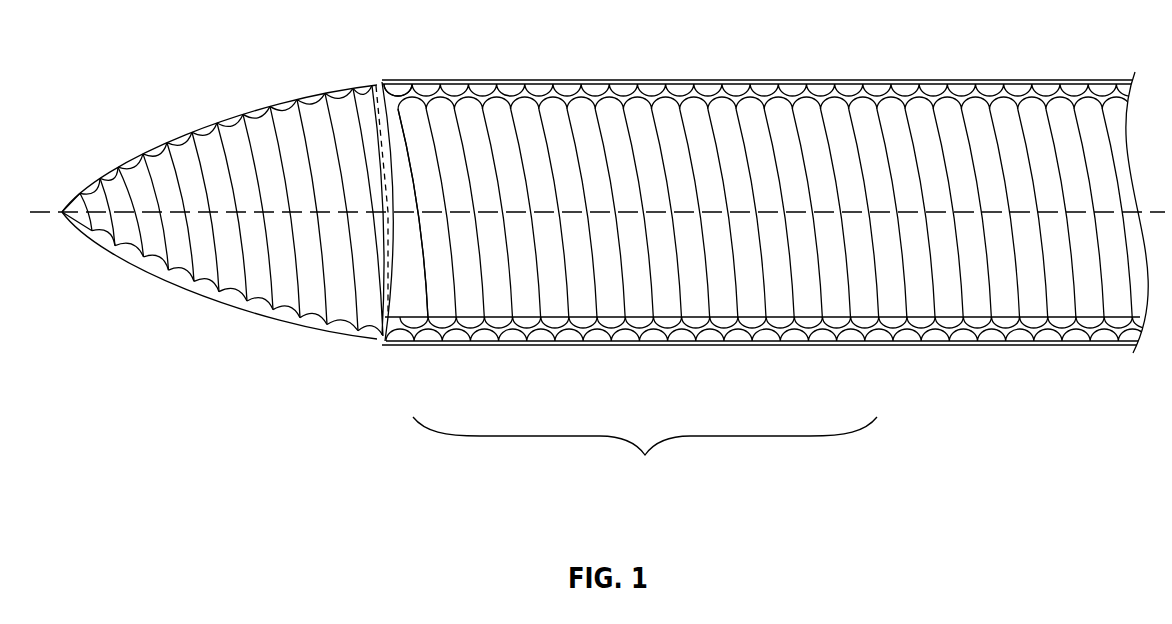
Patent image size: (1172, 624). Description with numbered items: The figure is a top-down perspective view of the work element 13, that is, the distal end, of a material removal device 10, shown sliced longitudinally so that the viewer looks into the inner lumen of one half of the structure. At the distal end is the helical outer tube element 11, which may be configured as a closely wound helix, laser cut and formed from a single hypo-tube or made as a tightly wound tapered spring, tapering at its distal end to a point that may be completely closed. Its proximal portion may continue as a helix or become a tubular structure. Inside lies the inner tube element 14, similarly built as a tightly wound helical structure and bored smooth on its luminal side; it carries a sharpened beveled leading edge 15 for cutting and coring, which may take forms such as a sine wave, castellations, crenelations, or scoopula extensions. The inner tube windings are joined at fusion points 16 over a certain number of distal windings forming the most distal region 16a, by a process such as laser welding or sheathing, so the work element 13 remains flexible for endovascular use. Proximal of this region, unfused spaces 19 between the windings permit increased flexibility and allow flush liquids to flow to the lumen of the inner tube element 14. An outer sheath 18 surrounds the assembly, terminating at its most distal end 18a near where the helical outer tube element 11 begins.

The material removal device 10 is at (1070, 82).
The helical outer tube element 11 is at (256, 318).
The work element 13 is at (93, 182).
The inner tube element 14 is at (947, 322).
The sharpened distal edge 15 is at (384, 322).
The fusion points 16 is at (462, 342).
The most distal region 16a is at (645, 456).
The outer sheath 18 is at (612, 80).
The most distal end of outer sheath 18a is at (377, 120).
The unfused spaces 19 is at (1020, 325).